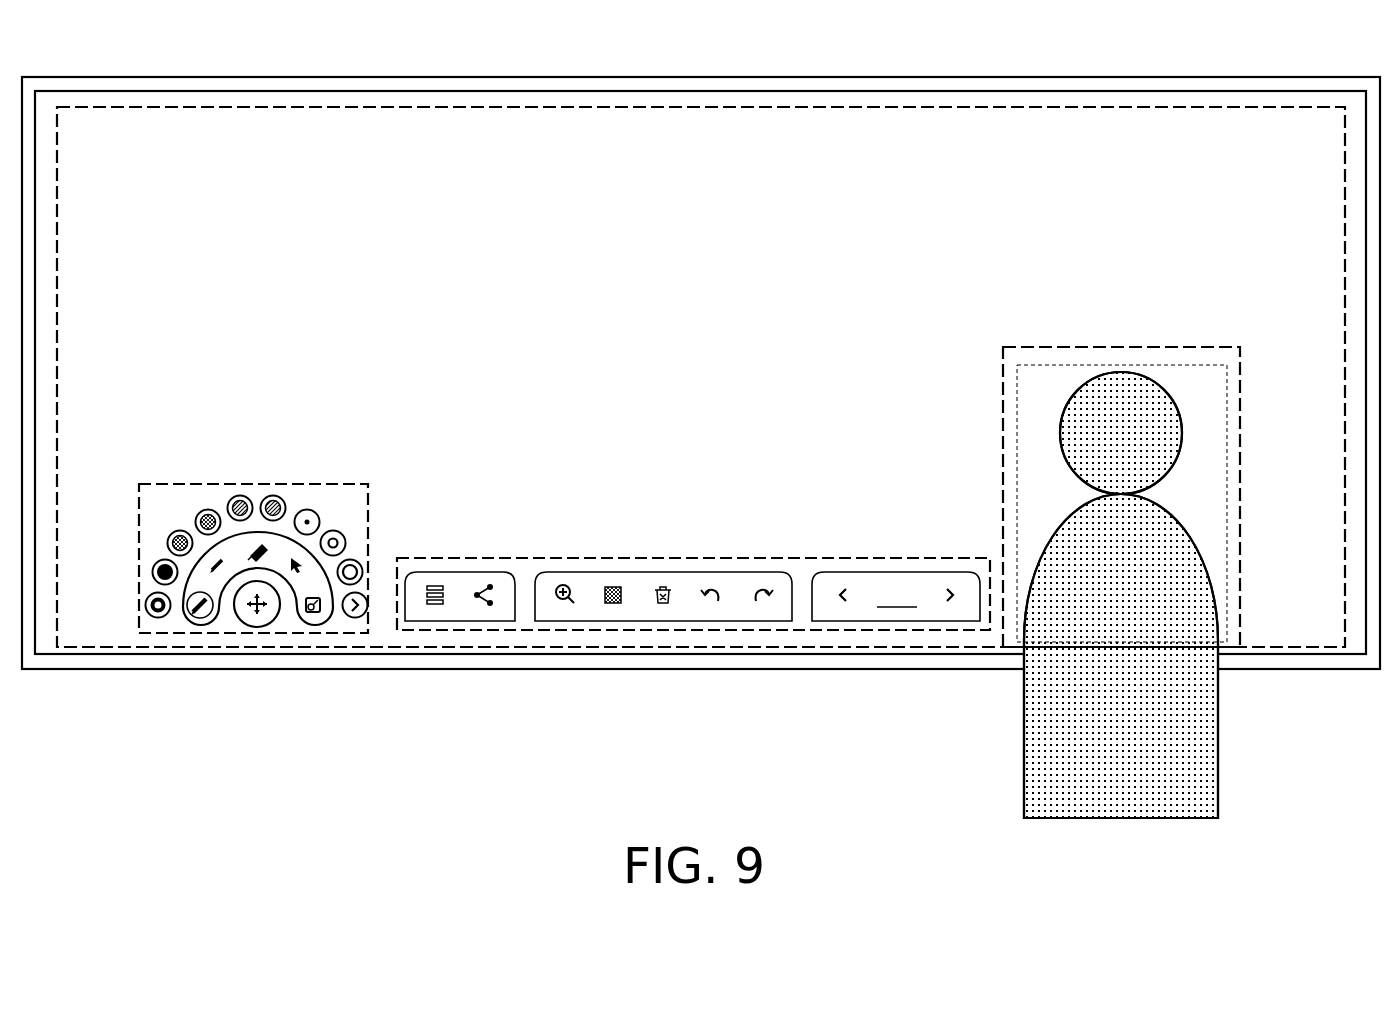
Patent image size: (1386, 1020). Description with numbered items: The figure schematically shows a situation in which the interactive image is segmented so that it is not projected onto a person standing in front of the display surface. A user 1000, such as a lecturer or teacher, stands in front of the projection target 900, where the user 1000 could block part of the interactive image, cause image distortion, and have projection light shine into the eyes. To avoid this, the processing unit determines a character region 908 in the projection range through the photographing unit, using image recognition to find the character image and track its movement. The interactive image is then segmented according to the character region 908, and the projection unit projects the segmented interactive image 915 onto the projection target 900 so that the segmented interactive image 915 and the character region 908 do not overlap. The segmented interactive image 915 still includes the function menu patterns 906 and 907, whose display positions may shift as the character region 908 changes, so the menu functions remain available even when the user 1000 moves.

The projection target 900 is at (1292, 77).
The segmented interactive image 915 is at (968, 107).
The function menu pattern 906 is at (204, 483).
The function menu pattern 907 is at (582, 556).
The character region 908 is at (1188, 362).
The user 1000 is at (1205, 735).